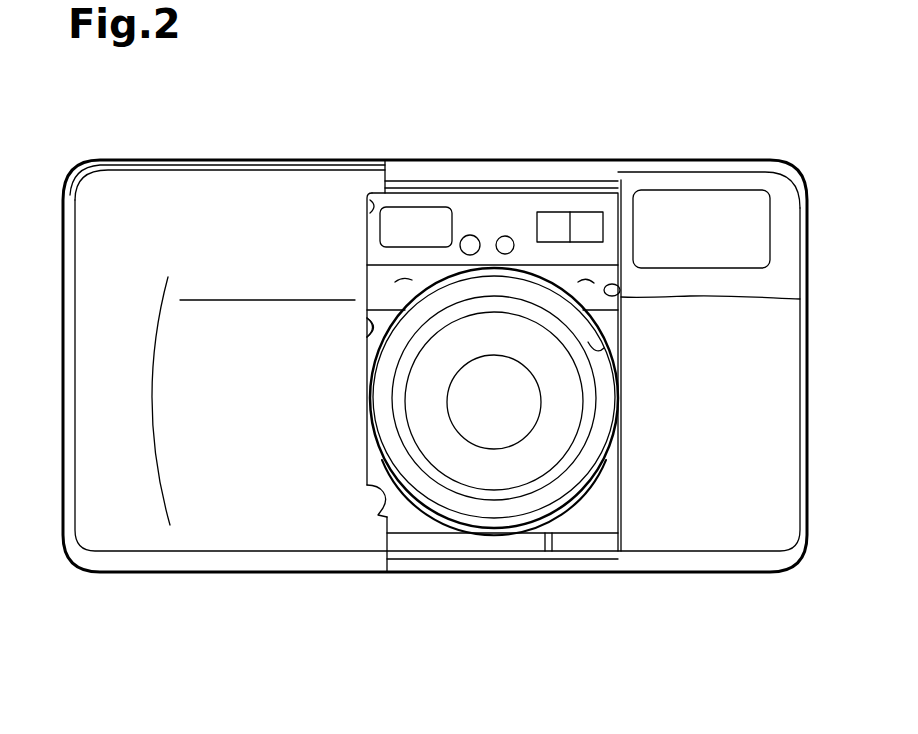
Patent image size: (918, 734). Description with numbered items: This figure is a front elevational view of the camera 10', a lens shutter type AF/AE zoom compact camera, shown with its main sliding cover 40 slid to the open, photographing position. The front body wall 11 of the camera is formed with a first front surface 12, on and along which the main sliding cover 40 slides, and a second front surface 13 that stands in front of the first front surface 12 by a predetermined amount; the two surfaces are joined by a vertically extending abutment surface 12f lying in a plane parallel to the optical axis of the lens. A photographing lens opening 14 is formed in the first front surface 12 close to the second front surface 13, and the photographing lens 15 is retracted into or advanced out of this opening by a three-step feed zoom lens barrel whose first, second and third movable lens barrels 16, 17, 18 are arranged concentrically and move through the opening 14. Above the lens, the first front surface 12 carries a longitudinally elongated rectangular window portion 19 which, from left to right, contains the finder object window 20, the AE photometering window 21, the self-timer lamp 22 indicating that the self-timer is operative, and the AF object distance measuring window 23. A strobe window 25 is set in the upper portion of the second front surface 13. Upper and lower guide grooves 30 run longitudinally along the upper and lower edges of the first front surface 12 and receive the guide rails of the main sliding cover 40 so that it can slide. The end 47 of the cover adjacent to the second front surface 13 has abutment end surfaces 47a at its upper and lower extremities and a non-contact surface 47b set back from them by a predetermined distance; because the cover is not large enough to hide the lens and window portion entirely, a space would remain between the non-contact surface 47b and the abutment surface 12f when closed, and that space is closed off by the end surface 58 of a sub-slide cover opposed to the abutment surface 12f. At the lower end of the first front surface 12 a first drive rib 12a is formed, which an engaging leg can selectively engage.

The camera 10' is at (457, 374).
The front body wall 11 is at (746, 522).
The first front surface 12 is at (408, 520).
The first drive rib 12a is at (555, 542).
The abutment surface 12f is at (800, 299).
The second front surface 13 is at (775, 436).
The photographing lens opening 14 is at (600, 348).
The photographing lens 15 is at (556, 386).
The first movable lens barrel 16 is at (488, 478).
The second movable lens barrel 17 is at (515, 495).
The third movable lens barrel 18 is at (540, 507).
The window portion 19 is at (362, 285).
The finder object window 20 is at (418, 223).
The AE photometering window 21 is at (470, 235).
The self-timer lamp 22 is at (505, 236).
The AF object distance measuring window 23 is at (563, 225).
The strobe window 25 is at (750, 210).
The guide grooves 30 is at (600, 177).
The main sliding cover 40 is at (267, 535).
The end of main slide cover 47 is at (377, 514).
The abutment end surfaces 47a is at (398, 178).
The non-contact surface 47b is at (367, 332).
The end surface of sub-slide cover 58 is at (370, 200).